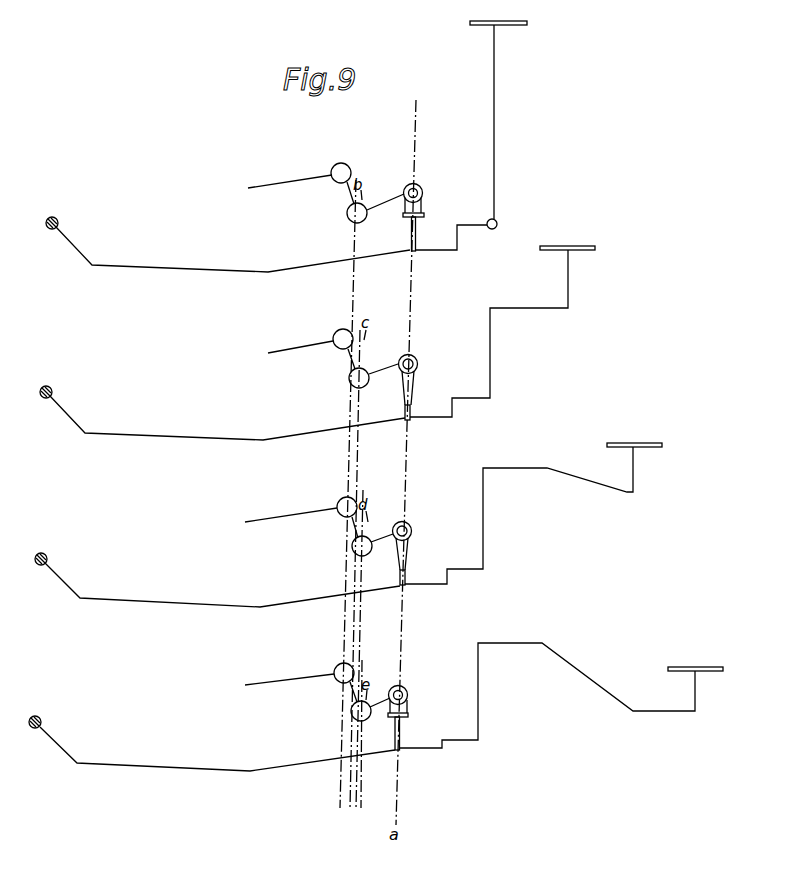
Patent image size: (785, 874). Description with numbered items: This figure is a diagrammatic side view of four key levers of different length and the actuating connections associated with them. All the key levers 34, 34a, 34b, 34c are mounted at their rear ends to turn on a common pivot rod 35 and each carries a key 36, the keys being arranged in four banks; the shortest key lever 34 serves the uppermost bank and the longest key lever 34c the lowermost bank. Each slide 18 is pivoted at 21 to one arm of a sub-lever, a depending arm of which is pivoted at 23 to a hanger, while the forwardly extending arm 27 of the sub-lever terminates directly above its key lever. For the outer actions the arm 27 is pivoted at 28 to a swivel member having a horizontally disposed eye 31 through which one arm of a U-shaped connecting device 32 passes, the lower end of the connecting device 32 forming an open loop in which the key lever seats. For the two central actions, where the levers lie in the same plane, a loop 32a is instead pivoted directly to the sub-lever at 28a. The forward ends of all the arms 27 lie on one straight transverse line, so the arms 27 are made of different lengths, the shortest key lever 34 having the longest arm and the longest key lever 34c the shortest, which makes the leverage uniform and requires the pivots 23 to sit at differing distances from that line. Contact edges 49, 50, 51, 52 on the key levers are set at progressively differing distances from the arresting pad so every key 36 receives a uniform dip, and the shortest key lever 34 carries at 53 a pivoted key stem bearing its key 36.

The slide 18 is at (282, 186).
The pivot 21 is at (337, 666).
The pivot 23 is at (366, 219).
The forwardly extending arm 27 is at (384, 202).
The pivot 28 is at (428, 182).
The pivot 28a is at (415, 360).
The eye 31 is at (424, 215).
The U-shaped connecting device 32 is at (416, 235).
The loop 32a is at (412, 388).
The key lever 34 is at (213, 270).
The key lever 34a is at (210, 437).
The key lever 34b is at (200, 603).
The key lever 34c is at (194, 768).
The pivot rod 35 is at (57, 219).
The key 36 is at (515, 25).
The contact edge 49 is at (470, 226).
The contact edge 50 is at (468, 399).
The contact edge 51 is at (463, 570).
The contact edge 52 is at (460, 741).
The pivot 53 is at (497, 222).